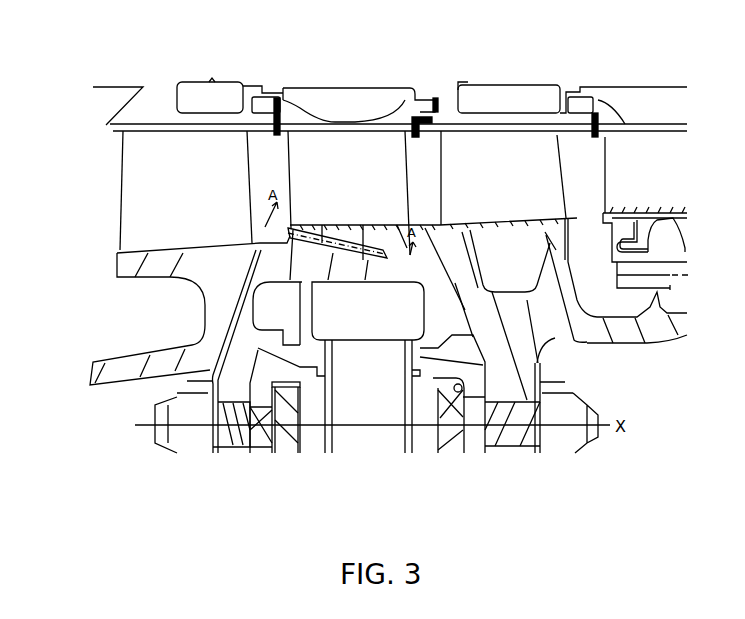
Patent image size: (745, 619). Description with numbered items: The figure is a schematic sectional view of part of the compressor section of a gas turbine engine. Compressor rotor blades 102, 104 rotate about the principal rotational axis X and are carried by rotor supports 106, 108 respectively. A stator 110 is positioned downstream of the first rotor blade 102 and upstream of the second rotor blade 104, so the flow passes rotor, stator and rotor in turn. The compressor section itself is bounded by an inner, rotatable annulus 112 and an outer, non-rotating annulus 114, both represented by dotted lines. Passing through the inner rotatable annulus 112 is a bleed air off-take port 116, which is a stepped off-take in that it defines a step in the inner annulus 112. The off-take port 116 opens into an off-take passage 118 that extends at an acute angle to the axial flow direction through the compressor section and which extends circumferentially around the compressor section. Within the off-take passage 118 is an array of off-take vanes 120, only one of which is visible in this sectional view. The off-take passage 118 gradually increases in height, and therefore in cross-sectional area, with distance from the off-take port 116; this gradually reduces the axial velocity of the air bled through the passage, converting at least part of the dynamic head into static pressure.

The compressor rotor blade 102 is at (166, 150).
The compressor rotor blade 104 is at (475, 143).
The rotor support 106 is at (117, 270).
The rotor support 108 is at (560, 222).
The stator 110 is at (353, 145).
The inner rotatable annulus 112 is at (117, 252).
The outer non-rotating annulus 114 is at (110, 129).
The bleed air off-take port 116 is at (264, 257).
The off-take passage 118 is at (338, 283).
The off-take vane 120 is at (372, 265).